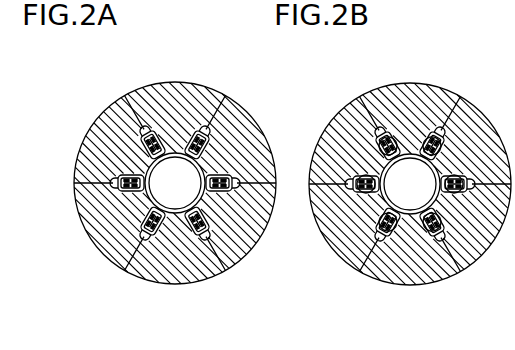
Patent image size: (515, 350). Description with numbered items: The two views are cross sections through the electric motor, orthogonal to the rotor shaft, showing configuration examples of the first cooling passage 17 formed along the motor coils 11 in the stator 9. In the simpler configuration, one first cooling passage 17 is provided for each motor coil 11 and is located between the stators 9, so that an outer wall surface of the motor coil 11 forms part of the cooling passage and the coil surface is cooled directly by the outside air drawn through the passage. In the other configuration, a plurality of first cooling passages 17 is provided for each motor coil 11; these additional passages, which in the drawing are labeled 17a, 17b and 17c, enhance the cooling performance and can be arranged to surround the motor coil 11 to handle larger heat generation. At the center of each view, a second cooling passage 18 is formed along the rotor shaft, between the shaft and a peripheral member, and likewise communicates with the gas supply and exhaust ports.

In FIG. 2A, the stator 9 is at (193, 92).
In FIG. 2B, the stator 9 is at (434, 92).
In FIG. 2A, the motor coil 11 is at (223, 177).
In FIG. 2B, the motor coil 11 is at (457, 178).
In FIG. 2A, the first cooling passage 17 is at (98, 188).
In FIG. 2B, the tab 17a is at (353, 195).
In FIG. 2B, the circular recess 17b is at (362, 173).
In FIG. 2B, the slot 17c is at (367, 203).
In FIG. 2A, the second cooling passage 18 is at (168, 213).
In FIG. 2B, the second cooling passage 18 is at (405, 217).